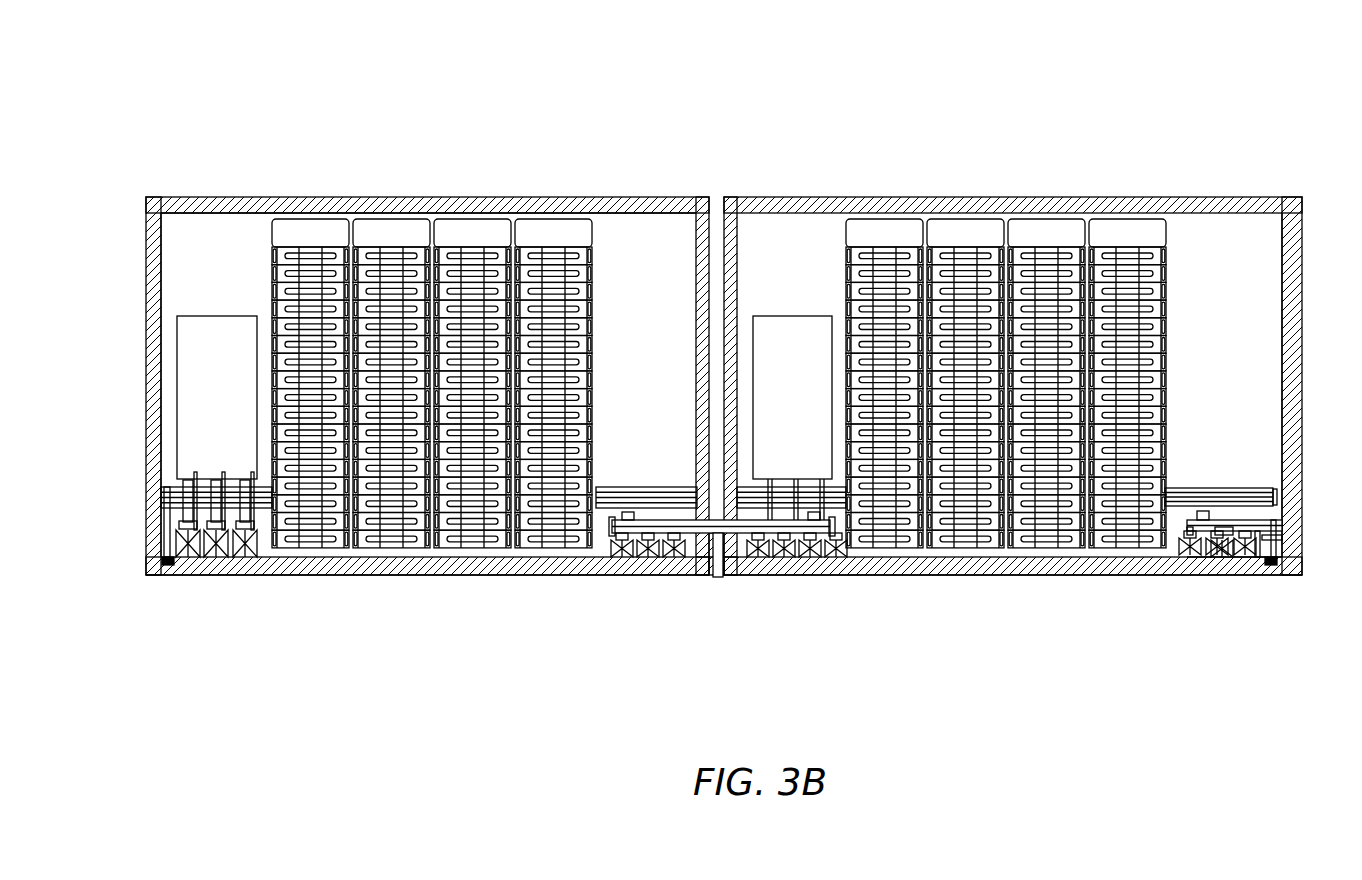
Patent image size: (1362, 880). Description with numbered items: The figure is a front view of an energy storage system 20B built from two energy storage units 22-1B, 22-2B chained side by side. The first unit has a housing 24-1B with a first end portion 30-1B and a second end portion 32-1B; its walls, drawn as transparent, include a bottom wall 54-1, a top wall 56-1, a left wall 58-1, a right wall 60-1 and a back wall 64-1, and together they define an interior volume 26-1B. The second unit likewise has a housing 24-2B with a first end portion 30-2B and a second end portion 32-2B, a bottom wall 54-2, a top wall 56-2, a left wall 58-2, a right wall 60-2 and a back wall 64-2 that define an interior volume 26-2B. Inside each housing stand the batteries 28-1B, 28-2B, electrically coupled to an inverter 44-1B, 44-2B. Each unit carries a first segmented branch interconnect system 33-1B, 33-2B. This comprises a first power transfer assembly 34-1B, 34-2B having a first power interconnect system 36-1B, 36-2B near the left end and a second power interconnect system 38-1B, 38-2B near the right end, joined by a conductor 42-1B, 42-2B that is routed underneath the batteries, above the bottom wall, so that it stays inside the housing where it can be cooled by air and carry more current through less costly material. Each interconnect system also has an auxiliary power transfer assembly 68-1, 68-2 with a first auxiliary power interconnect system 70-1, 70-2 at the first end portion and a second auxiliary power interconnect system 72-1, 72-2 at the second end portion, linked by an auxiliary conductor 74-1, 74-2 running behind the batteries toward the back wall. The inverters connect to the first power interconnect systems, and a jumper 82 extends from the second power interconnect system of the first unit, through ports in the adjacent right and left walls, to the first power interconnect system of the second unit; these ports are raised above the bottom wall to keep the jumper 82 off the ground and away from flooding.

The energy storage system 20B is at (535, 62).
The first energy storage unit 22-1B is at (493, 196).
The second energy storage unit 22-2B is at (918, 196).
The housing 24-1B is at (150, 226).
The housing 24-2B is at (1300, 240).
The interior volume 26-1B is at (232, 238).
The interior volume 26-2B is at (820, 238).
The batteries 28-1B is at (374, 265).
The batteries 28-2B is at (1001, 265).
The first end portion 30-1B is at (160, 192).
The first end portion 30-2B is at (745, 192).
The second end portion 32-1B is at (680, 192).
The second end portion 32-2B is at (1266, 192).
The first segmented branch interconnect system 33-1B is at (215, 570).
The first segmented branch interconnect system 33-2B is at (820, 562).
The first power transfer assembly 34-1B is at (183, 570).
The first power transfer assembly 34-2B is at (805, 570).
The first power interconnect system 36-1B is at (246, 562).
The first power interconnect system 36-2B is at (832, 560).
The second power interconnect system 38-1B is at (628, 565).
The second power interconnect system 38-2B is at (1215, 562).
The conductor 42-1B is at (345, 576).
The conductor 42-2B is at (960, 576).
The inverter 44-1B is at (190, 410).
The inverter 44-2B is at (806, 465).
The bottom wall 54-1 is at (440, 576).
The bottom wall 54-2 is at (1005, 576).
The top wall 56-1 is at (274, 196).
The top wall 56-2 is at (1072, 196).
The left wall 58-1 is at (160, 350).
The left wall 58-2 is at (726, 560).
The right wall 60-1 is at (715, 577).
The right wall 60-2 is at (1300, 565).
The back wall 64-1 is at (180, 262).
The back wall 64-2 is at (1270, 285).
The auxiliary power transfer assembly 68-1 is at (165, 560).
The auxiliary power transfer assembly 68-2 is at (1275, 568).
The first auxiliary power interconnect system 70-1 is at (165, 540).
The first auxiliary power interconnect system 70-2 is at (775, 560).
The second auxiliary power interconnect system 72-1 is at (700, 560).
The second auxiliary power interconnect system 72-2 is at (1258, 545).
The auxiliary conductor 74-1 is at (612, 510).
The auxiliary conductor 74-2 is at (1245, 488).
The jumper 82 is at (716, 580).